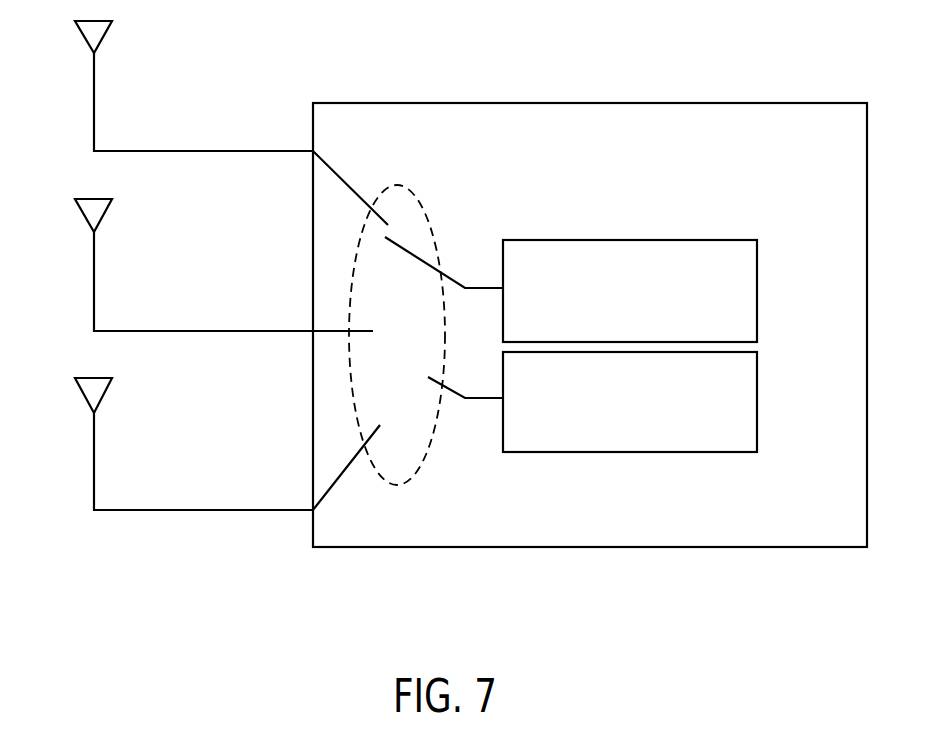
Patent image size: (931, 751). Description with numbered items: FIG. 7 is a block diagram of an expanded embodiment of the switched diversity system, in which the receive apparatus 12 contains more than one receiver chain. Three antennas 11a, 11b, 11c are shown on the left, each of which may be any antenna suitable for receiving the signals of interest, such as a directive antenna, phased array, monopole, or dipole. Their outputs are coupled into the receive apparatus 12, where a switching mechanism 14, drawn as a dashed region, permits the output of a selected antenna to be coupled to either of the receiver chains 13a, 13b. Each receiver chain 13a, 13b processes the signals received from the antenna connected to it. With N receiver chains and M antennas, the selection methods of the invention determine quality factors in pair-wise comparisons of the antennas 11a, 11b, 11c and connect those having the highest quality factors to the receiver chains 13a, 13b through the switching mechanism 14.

The antenna 11a is at (93, 101).
The antenna 11b is at (92, 289).
The antenna 11c is at (92, 467).
The receive apparatus 12 is at (625, 103).
The receiver chain 13a is at (625, 240).
The receiver chain 13b is at (623, 453).
The switching mechanism 14 is at (433, 445).